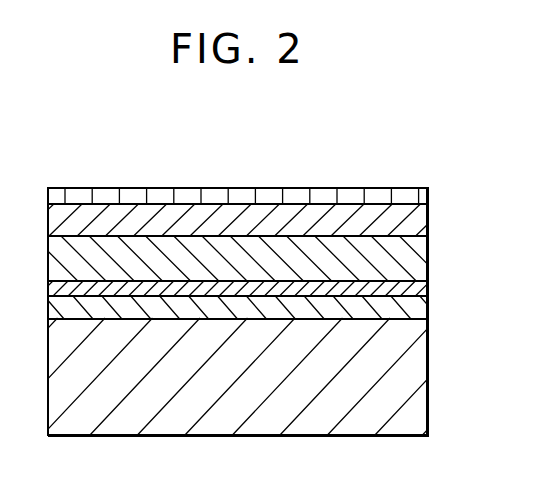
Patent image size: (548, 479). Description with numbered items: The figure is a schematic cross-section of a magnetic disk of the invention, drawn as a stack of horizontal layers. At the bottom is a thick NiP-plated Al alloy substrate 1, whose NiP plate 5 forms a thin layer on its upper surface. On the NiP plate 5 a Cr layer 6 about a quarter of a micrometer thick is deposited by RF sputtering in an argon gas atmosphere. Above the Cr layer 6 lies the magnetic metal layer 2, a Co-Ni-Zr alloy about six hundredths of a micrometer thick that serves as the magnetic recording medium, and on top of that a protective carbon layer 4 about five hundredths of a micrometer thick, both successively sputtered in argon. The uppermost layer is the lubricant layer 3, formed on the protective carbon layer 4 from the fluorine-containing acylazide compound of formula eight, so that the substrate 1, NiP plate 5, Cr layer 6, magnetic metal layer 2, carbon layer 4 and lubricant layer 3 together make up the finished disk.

The Al alloy substrate 1 is at (422, 378).
The magnetic metal layer 2 is at (419, 260).
The lubricant layer 3 is at (421, 195).
The protective carbon layer 4 is at (421, 220).
The NiP plate 5 is at (421, 307).
The Cr layer 6 is at (421, 287).